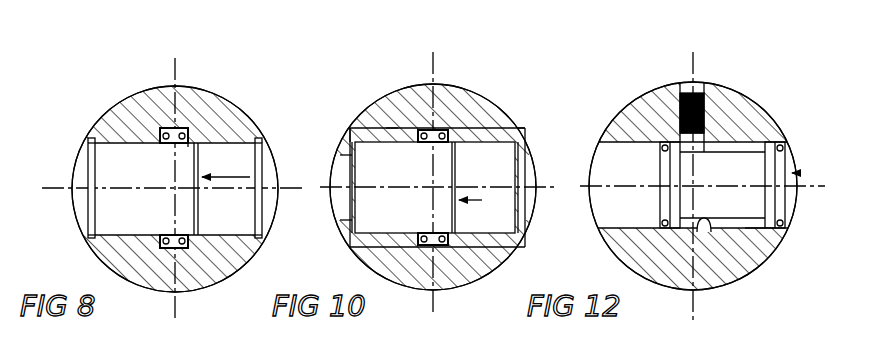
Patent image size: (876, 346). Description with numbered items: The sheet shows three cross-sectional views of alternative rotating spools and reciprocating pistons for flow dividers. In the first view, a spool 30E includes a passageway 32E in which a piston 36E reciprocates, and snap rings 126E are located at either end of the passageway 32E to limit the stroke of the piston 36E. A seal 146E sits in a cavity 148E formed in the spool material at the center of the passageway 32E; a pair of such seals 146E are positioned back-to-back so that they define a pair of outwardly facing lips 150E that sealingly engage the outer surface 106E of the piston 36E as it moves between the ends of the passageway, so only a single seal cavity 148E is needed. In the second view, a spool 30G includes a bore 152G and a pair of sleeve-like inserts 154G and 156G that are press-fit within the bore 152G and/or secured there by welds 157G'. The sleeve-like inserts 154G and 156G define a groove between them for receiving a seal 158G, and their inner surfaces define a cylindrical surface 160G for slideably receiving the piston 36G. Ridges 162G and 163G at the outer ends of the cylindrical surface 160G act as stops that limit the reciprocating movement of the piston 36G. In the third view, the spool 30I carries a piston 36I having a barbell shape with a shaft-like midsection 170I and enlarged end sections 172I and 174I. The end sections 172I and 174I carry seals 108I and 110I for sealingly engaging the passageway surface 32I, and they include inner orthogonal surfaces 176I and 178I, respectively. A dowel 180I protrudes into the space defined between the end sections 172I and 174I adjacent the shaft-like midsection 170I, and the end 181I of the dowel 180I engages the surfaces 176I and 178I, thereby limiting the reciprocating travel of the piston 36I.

In FIG. 8, the spool 30E is at (261, 99).
In FIG. 8, the passageway 32E is at (80, 173).
In FIG. 8, the piston 36E is at (250, 177).
In FIG. 8, the outer surface 106E is at (141, 185).
In FIG. 8, the snap rings 126E is at (90, 204).
In FIG. 8, the seal 146E is at (160, 129).
In FIG. 8, the cavity 148E is at (187, 128).
In FIG. 8, the outwardly facing lips 150E is at (187, 144).
In FIG. 10, the spool 30G is at (508, 94).
In FIG. 10, the piston 36G is at (515, 200).
In FIG. 10, the bore 152G is at (510, 127).
In FIG. 10, the sleeve-like insert 154G is at (468, 130).
In FIG. 10, the sleeve-like insert 156G is at (397, 128).
In FIG. 10, the welds 157G' is at (359, 93).
In FIG. 10, the seal 158G is at (427, 143).
In FIG. 10, the cylindrical surface 160G is at (496, 145).
In FIG. 10, the ridge 162G is at (338, 160).
In FIG. 10, the ridge 163G is at (523, 141).
In FIG. 12, the spool 30I is at (768, 80).
In FIG. 12, the passageway surface 32I is at (605, 230).
In FIG. 12, the piston 36I is at (800, 173).
In FIG. 12, the seal 108I is at (668, 216).
In FIG. 12, the seal 110I is at (767, 207).
In FIG. 12, the shaft-like midsection 170I is at (745, 150).
In FIG. 12, the enlarged end section 172I is at (668, 168).
In FIG. 12, the enlarged end section 174I is at (775, 204).
In FIG. 12, the inner orthogonal surface 176I is at (706, 222).
In FIG. 12, the inner orthogonal surface 178I is at (748, 230).
In FIG. 12, the dowel 180I is at (705, 82).
In FIG. 12, the end of dowel 181I is at (697, 143).